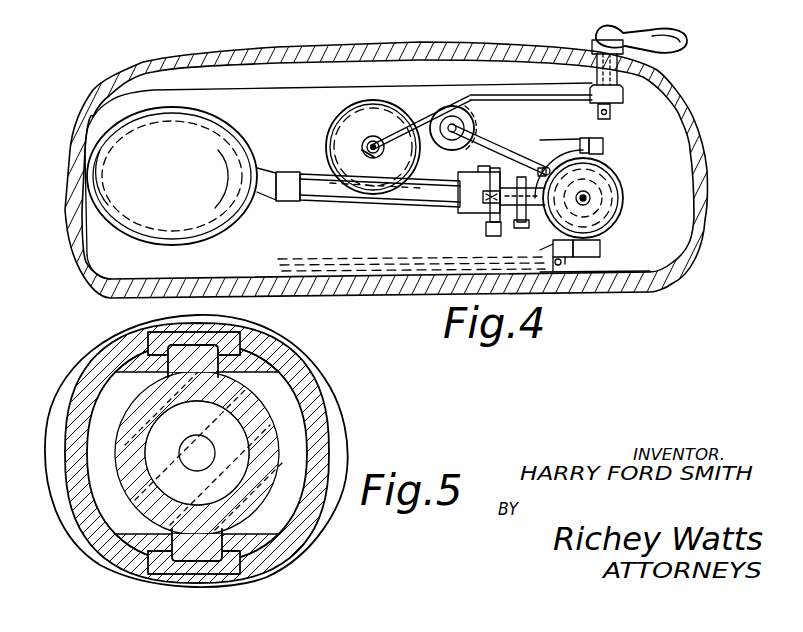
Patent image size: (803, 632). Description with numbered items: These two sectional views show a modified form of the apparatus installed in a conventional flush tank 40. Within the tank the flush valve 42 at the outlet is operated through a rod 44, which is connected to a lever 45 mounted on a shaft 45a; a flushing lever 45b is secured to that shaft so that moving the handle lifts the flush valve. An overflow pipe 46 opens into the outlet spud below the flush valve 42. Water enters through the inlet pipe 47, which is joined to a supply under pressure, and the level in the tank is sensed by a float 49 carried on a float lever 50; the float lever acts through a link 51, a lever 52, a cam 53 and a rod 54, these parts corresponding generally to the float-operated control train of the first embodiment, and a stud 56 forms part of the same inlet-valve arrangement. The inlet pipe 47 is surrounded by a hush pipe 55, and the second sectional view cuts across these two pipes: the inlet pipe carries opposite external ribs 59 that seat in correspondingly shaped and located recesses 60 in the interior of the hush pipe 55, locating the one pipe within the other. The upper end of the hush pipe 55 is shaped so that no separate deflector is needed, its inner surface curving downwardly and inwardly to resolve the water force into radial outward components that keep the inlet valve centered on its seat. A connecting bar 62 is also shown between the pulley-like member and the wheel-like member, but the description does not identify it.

In FIG. 4, the flush tank 40 is at (72, 230).
In FIG. 4, the flush valve 42 is at (332, 126).
In FIG. 4, the rod 44 is at (360, 152).
In FIG. 4, the lever 45 is at (528, 100).
In FIG. 4, the shaft 45a is at (612, 118).
In FIG. 4, the flushing lever 45b is at (645, 30).
In FIG. 4, the overflow pipe 46 is at (474, 124).
In FIG. 5, the inlet pipe 47 is at (270, 437).
In FIG. 4, the float 49 is at (172, 176).
In FIG. 4, the float lever 50 is at (322, 186).
In FIG. 4, the link 51 is at (467, 200).
In FIG. 4, the lever 52 is at (527, 226).
In FIG. 4, the cam 53 is at (585, 258).
In FIG. 4, the rod 54 is at (570, 271).
In FIG. 4, the hush pipe 55 is at (622, 168).
In FIG. 5, the hush pipe 55 is at (300, 381).
In FIG. 4, the stud 56 is at (592, 198).
In FIG. 5, the external ribs 59 is at (245, 333).
In FIG. 5, the recesses 60 is at (157, 345).
In FIG. 4, the connecting bar 62 is at (484, 153).